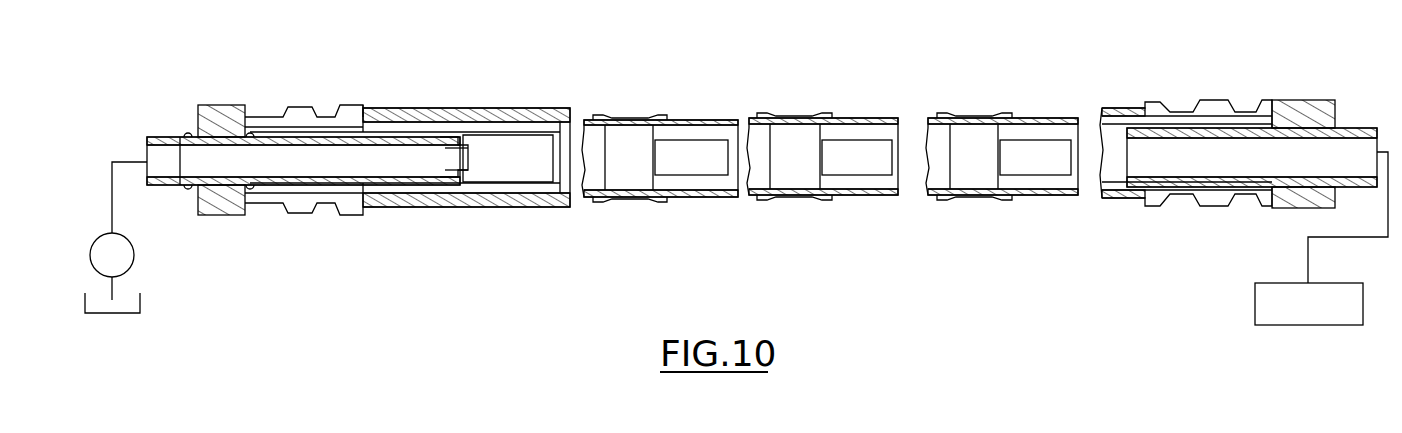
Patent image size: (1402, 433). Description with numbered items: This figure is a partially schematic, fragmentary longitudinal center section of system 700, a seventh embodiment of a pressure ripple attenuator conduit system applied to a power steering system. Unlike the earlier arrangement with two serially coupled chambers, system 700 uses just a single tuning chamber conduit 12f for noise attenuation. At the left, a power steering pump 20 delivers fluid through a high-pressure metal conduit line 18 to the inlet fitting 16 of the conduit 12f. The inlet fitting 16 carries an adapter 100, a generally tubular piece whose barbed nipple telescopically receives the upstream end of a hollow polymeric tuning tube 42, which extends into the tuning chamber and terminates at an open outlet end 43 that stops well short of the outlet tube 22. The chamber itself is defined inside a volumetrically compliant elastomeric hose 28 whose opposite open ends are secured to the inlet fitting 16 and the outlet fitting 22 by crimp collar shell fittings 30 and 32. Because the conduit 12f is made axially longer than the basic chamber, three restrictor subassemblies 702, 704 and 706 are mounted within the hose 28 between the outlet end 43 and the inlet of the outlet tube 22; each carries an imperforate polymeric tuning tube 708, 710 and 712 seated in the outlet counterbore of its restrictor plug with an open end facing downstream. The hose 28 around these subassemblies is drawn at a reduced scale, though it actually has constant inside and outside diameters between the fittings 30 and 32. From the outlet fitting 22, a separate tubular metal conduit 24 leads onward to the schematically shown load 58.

The system 700 is at (188, 89).
The tuning chamber conduit 12f is at (185, 122).
The high-pressure metal conduit line 18 is at (108, 194).
The inlet fitting 16 is at (168, 190).
The power steering pump 20 is at (134, 258).
The crimp collar shell fitting 30 is at (298, 106).
The tuning tube 42 is at (540, 128).
The open outlet end 43 is at (558, 140).
The adapter 100 is at (408, 190).
The restrictor subassembly 702 is at (627, 110).
The tuning tube 708 is at (690, 140).
The restrictor subassembly 704 is at (793, 110).
The tuning tube 710 is at (838, 140).
The restrictor subassembly 706 is at (982, 111).
The tuning tube 712 is at (1040, 140).
The hose 28 is at (846, 203).
The crimp collar shell fitting 32 is at (1211, 100).
The outlet fitting 22 is at (1355, 124).
The tubular metal conduit 24 is at (1308, 248).
The load 58 is at (1255, 297).